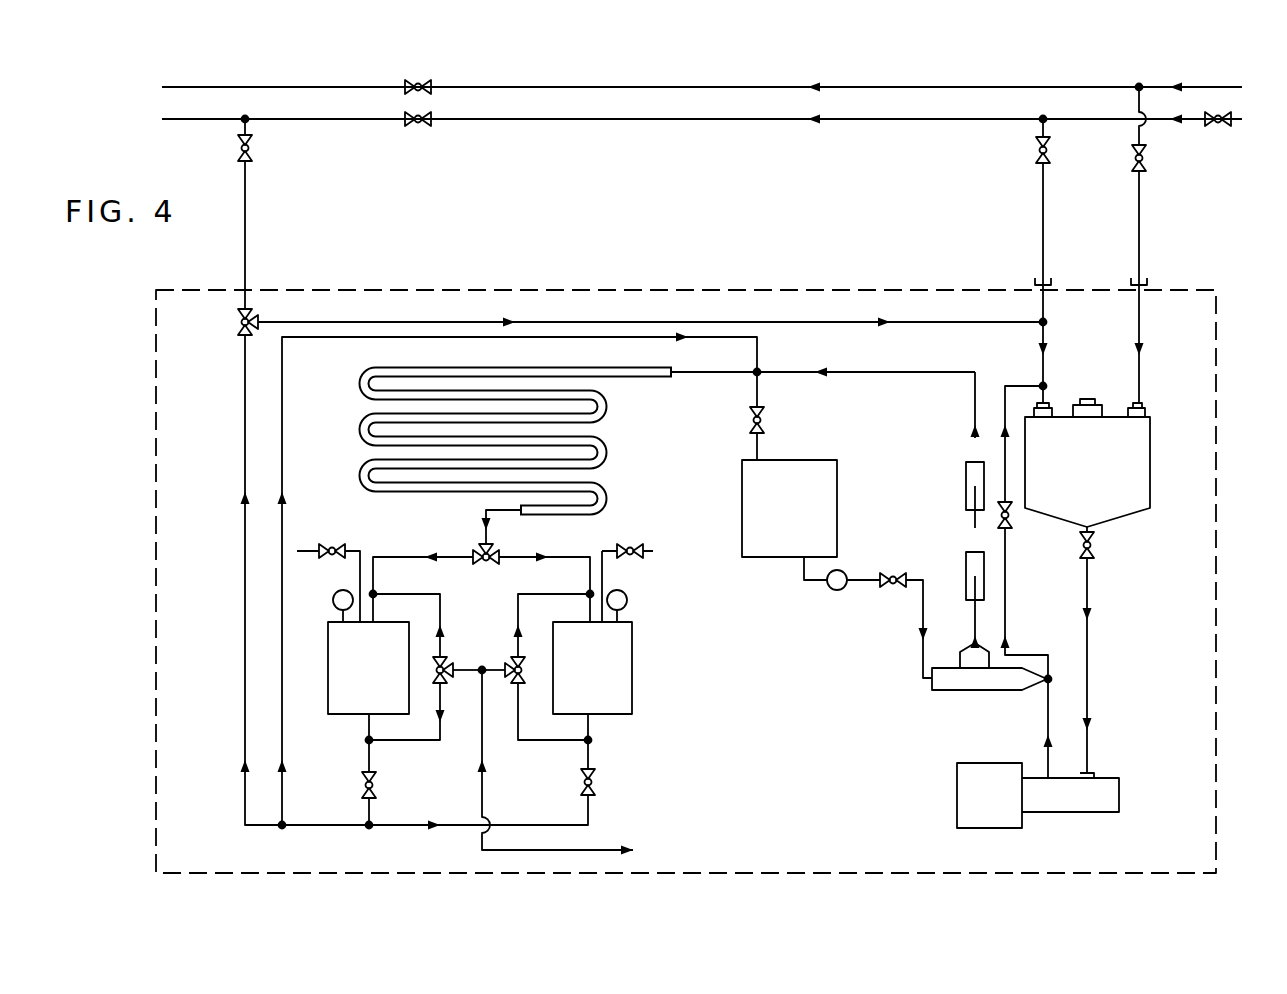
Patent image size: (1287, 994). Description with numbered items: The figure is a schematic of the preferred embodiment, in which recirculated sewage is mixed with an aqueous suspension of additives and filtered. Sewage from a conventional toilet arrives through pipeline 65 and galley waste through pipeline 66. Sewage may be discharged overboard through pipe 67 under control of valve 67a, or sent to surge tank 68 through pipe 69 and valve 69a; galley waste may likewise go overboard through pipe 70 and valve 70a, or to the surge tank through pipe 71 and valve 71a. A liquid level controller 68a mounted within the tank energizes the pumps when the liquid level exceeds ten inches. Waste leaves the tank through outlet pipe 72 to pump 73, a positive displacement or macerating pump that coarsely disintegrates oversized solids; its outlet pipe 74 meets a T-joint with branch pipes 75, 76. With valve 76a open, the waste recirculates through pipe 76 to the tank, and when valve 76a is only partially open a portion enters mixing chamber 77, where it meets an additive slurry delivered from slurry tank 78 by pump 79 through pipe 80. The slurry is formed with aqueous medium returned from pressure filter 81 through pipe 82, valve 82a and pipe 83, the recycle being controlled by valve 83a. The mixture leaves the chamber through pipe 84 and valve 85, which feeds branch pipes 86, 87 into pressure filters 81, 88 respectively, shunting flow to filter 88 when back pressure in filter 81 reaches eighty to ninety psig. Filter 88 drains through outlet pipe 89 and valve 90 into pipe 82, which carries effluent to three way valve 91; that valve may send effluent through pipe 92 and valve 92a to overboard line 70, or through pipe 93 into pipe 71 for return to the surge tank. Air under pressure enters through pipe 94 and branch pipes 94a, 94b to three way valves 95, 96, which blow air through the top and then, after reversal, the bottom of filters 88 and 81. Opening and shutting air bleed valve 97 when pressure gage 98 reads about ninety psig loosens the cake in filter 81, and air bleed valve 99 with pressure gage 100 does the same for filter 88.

The pipeline 65 is at (1192, 86).
The pipeline 66 is at (1186, 126).
The pipe 67 is at (765, 86).
The valve 67a is at (432, 84).
The surge tank 68 is at (1152, 462).
The liquid level controller 68a is at (1088, 399).
The pipe 69 is at (1147, 283).
The valve 69a is at (1147, 155).
The pipe 70 is at (706, 121).
The valve 70a is at (424, 127).
The pipe 71 is at (1052, 282).
The valve 71a is at (1034, 152).
The outlet pipe 72 is at (1090, 618).
The pump 73 is at (1055, 815).
The pipe 74 is at (1048, 778).
The branch pipe 75 is at (1046, 683).
The branch pipe 76 is at (1008, 650).
The valve 76a is at (1010, 529).
The mixing chamber 77 is at (932, 681).
The slurry tank 78 is at (838, 530).
The pump 79 is at (832, 590).
The pipe 80 is at (923, 628).
The pressure filter 81 is at (638, 688).
The pipe 82 is at (590, 824).
The valve 82a is at (601, 782).
The pipe 83 is at (700, 340).
The valve 83a is at (764, 420).
The pipe 84 is at (977, 382).
The valve 85 is at (478, 552).
The branch pipe 86 is at (518, 557).
The branch pipe 87 is at (393, 557).
The pressure filter 88 is at (318, 722).
The outlet pipe 89 is at (370, 763).
The valve 90 is at (359, 785).
The three way valve 91 is at (236, 320).
The pipe 92 is at (247, 258).
The valve 92a is at (254, 147).
The pipe 93 is at (745, 320).
The pipe 94 is at (484, 786).
The branch pipe 94a is at (465, 674).
The branch pipe 94b is at (482, 666).
The three way valve 95 is at (440, 684).
The three way valve 96 is at (530, 685).
The air bleed valve 97 is at (633, 547).
The pressure gage 98 is at (627, 603).
The air bleed valve 99 is at (332, 548).
The pressure gage 100 is at (335, 603).